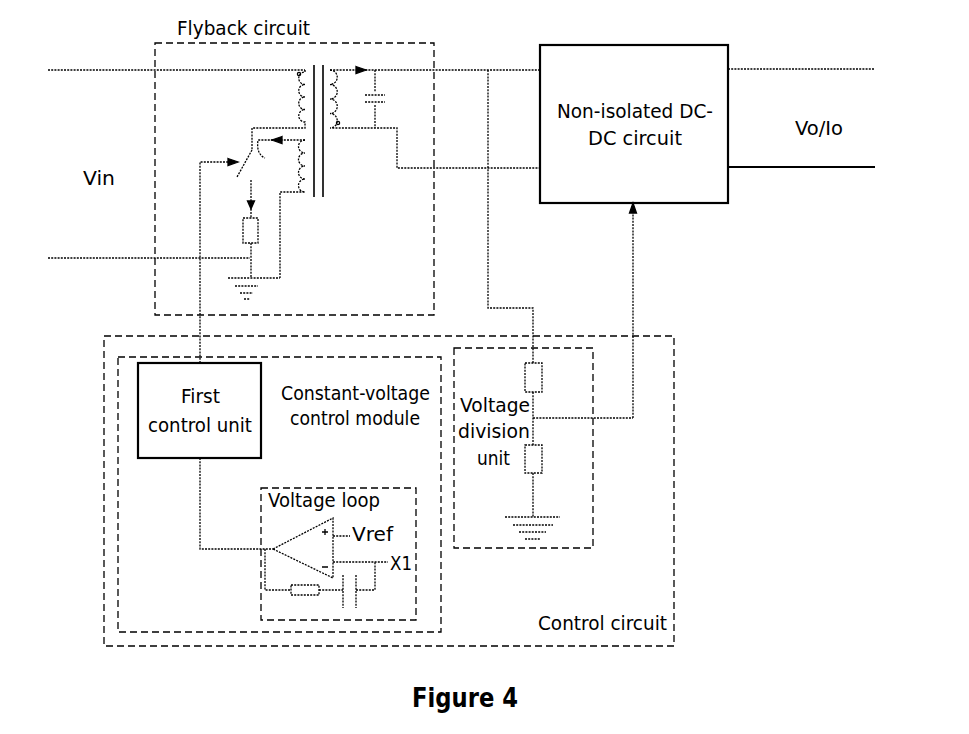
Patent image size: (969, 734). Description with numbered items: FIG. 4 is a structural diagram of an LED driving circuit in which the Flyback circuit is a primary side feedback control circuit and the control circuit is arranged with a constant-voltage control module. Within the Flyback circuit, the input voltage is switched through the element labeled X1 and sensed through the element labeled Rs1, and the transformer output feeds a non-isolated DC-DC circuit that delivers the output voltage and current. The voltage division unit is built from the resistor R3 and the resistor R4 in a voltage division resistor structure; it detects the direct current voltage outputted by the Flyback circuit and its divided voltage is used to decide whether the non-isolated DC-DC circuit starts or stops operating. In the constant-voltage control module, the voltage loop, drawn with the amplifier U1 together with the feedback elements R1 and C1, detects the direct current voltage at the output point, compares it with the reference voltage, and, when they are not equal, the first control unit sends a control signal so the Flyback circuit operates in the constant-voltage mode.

The switch X1 is at (266, 163).
The sampling resistor Rs1 is at (233, 229).
The operational amplifier U1 is at (303, 548).
The feedback resistor R1 is at (304, 572).
The feedback capacitor C1 is at (368, 589).
The resistor R3 is at (579, 404).
The resistor R4 is at (546, 481).